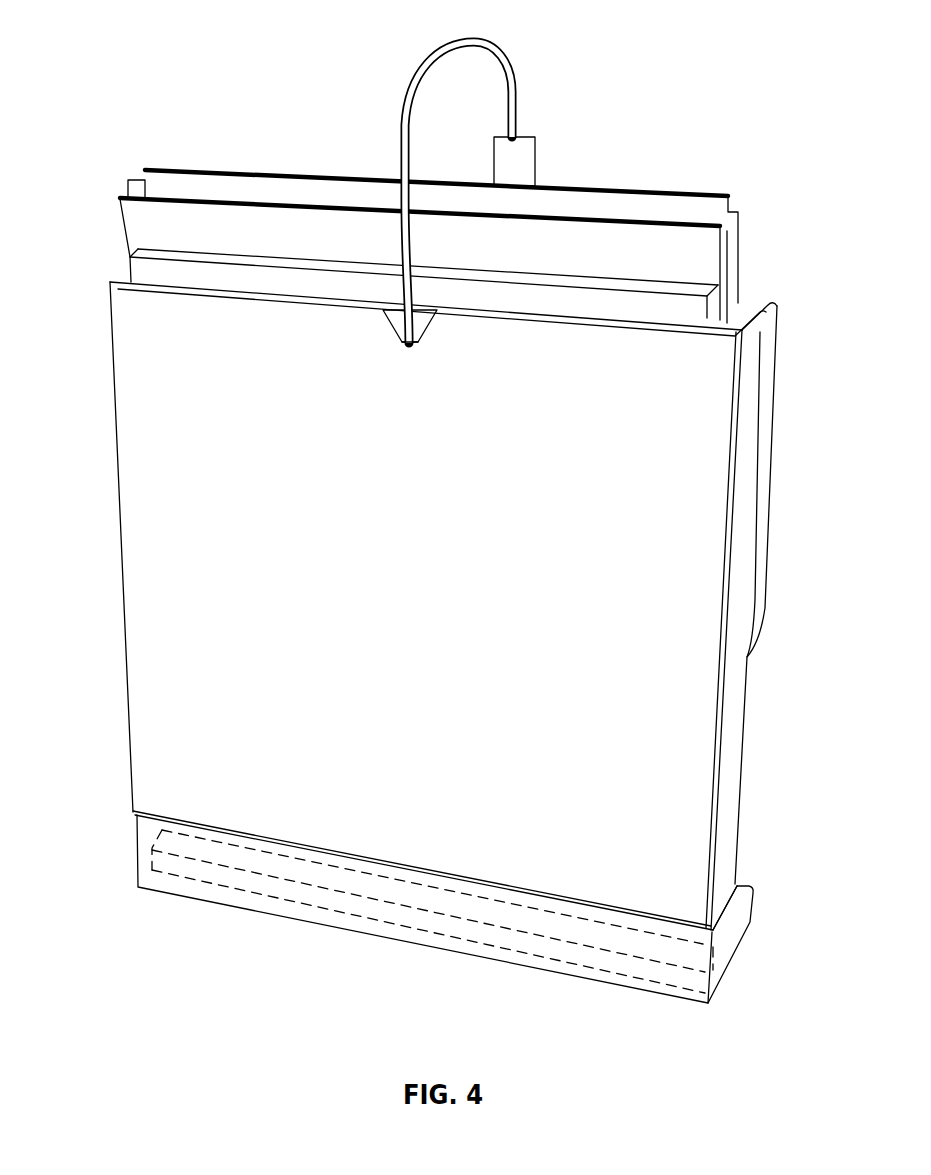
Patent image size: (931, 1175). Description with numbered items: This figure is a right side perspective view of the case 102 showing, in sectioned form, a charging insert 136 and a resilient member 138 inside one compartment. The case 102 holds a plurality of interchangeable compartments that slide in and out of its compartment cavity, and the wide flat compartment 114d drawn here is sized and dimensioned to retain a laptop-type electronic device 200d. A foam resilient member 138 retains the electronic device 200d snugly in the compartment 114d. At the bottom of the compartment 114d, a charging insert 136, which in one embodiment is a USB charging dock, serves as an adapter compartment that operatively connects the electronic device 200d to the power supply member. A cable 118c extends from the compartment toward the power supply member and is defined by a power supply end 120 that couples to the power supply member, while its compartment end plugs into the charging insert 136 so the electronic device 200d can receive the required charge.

The case 102 is at (726, 700).
The wide flat compartment 114d is at (722, 944).
The cable 118c is at (420, 74).
The power supply end 120 is at (521, 137).
The charging insert 136 is at (157, 857).
The foam resilient member 138 is at (132, 268).
The electronic device 200d is at (152, 176).